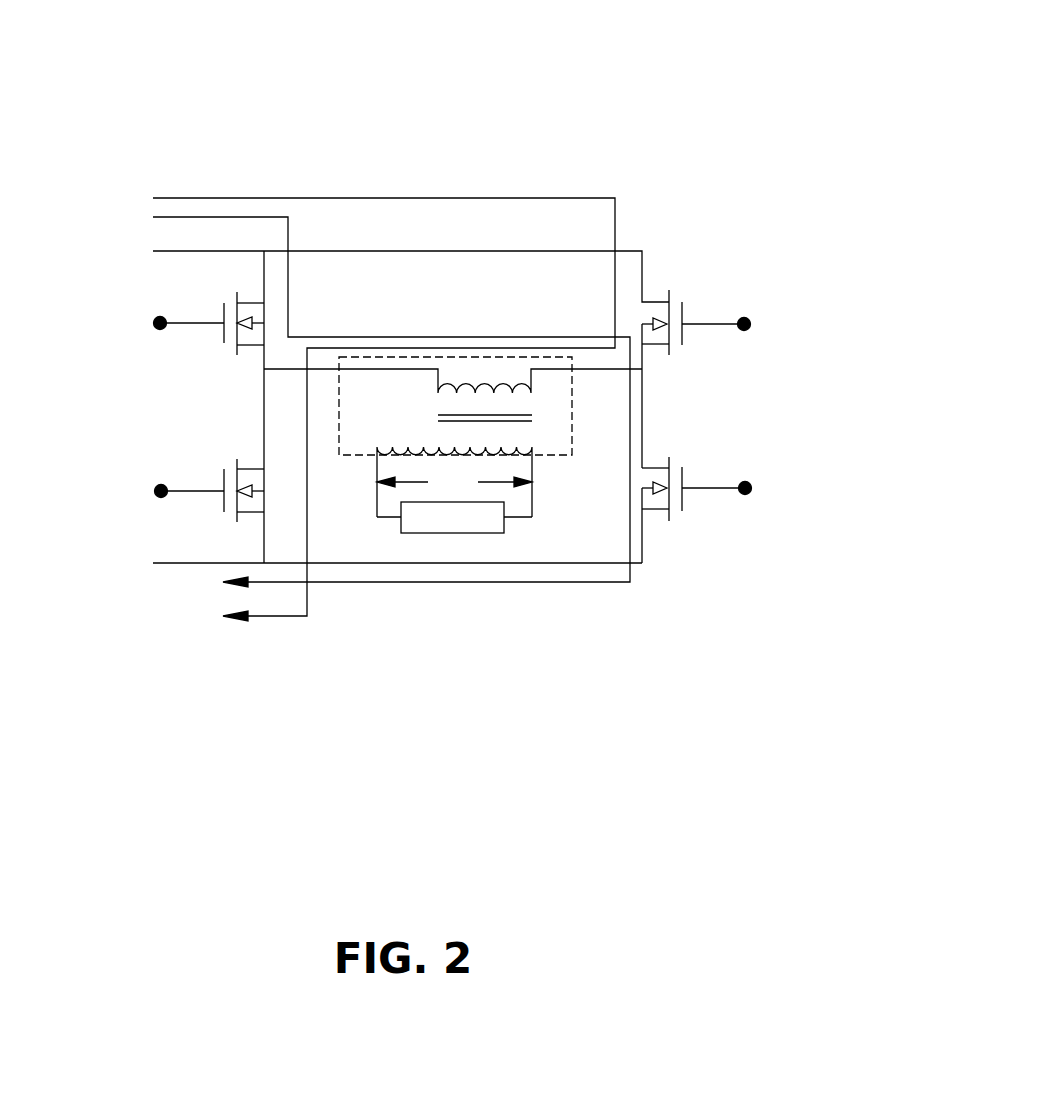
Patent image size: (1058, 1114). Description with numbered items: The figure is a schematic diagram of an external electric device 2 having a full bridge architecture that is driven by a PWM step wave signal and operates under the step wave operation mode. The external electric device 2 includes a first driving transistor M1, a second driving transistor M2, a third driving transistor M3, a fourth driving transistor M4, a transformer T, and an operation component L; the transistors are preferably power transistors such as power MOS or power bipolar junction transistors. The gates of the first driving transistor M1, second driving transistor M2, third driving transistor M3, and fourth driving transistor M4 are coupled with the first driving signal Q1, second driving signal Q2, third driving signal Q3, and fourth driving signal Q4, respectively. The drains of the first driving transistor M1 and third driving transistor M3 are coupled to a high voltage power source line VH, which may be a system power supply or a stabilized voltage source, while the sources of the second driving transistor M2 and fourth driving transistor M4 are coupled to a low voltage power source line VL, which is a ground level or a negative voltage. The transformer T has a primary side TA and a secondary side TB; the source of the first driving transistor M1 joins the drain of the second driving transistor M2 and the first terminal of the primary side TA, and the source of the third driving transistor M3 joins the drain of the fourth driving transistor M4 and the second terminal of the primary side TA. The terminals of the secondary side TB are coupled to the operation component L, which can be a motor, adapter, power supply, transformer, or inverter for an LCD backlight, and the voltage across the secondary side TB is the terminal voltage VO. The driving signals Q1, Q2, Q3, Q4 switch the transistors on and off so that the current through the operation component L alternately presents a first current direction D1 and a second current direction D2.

The external electric device 2 is at (713, 113).
The first driving transistor M1 is at (230, 283).
The second driving transistor M2 is at (223, 461).
The third driving transistor M3 is at (670, 282).
The fourth driving transistor M4 is at (670, 448).
The first driving signal Q1 is at (164, 323).
The second driving signal Q2 is at (164, 491).
The third driving signal Q3 is at (744, 324).
The fourth driving signal Q4 is at (744, 488).
The high voltage power source line VH is at (386, 399).
The low voltage power source line VL is at (373, 563).
The first current direction D1 is at (391, 407).
The second current direction D2 is at (384, 414).
The transformer T is at (340, 405).
The primary side TA is at (485, 383).
The secondary side TB is at (413, 432).
The operation component L is at (454, 518).
The terminal voltage VO is at (454, 482).